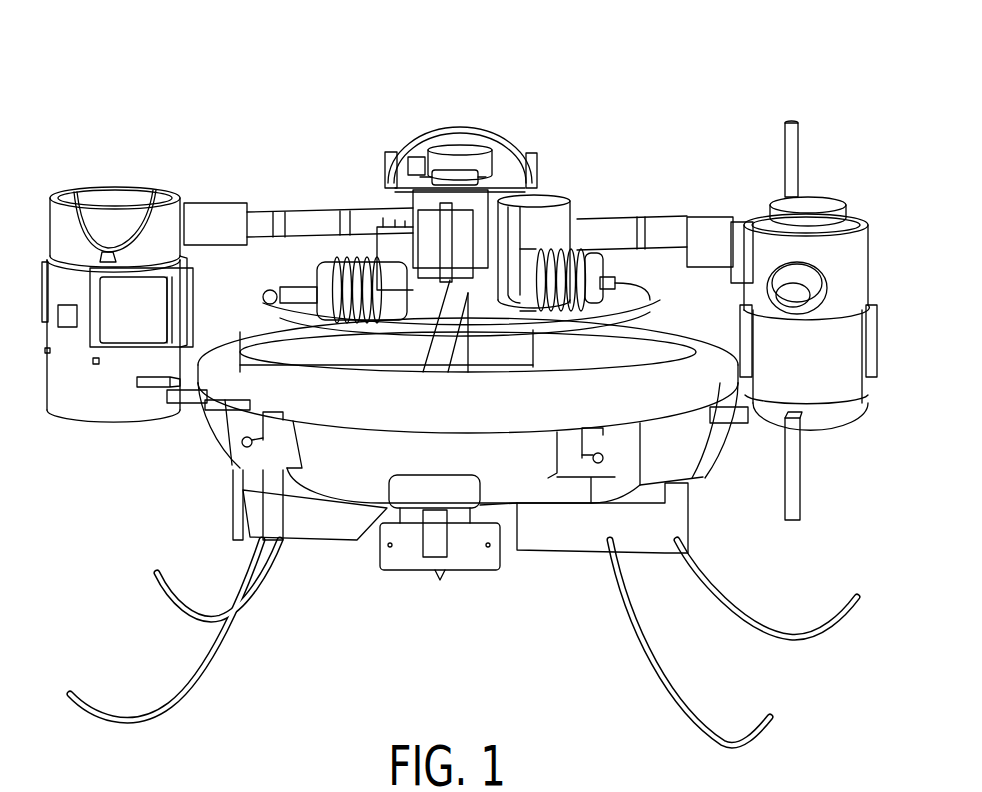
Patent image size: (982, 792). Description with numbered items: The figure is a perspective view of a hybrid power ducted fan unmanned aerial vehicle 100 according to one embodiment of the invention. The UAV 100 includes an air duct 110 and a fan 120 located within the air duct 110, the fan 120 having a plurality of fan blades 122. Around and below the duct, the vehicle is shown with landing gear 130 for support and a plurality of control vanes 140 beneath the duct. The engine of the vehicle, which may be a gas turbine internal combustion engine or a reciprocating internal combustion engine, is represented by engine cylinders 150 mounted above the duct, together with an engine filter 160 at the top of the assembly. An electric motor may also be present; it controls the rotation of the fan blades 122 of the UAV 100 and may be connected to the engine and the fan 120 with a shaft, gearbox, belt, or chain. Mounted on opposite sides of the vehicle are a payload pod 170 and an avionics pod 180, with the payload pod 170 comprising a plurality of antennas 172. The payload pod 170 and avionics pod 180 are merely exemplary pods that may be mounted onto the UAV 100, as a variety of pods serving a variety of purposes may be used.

The ducted fan unmanned aerial vehicle 100 is at (566, 122).
The air duct 110 is at (215, 425).
The fan 120 is at (722, 370).
The fan blades 122 is at (275, 333).
The landing gear 130 is at (187, 690).
The control vanes 140 is at (467, 567).
The engine cylinders 150 is at (352, 262).
The engine filter 160 is at (470, 150).
The payload pod 170 is at (770, 218).
The antennas 172 is at (790, 123).
The avionics pod 180 is at (110, 222).